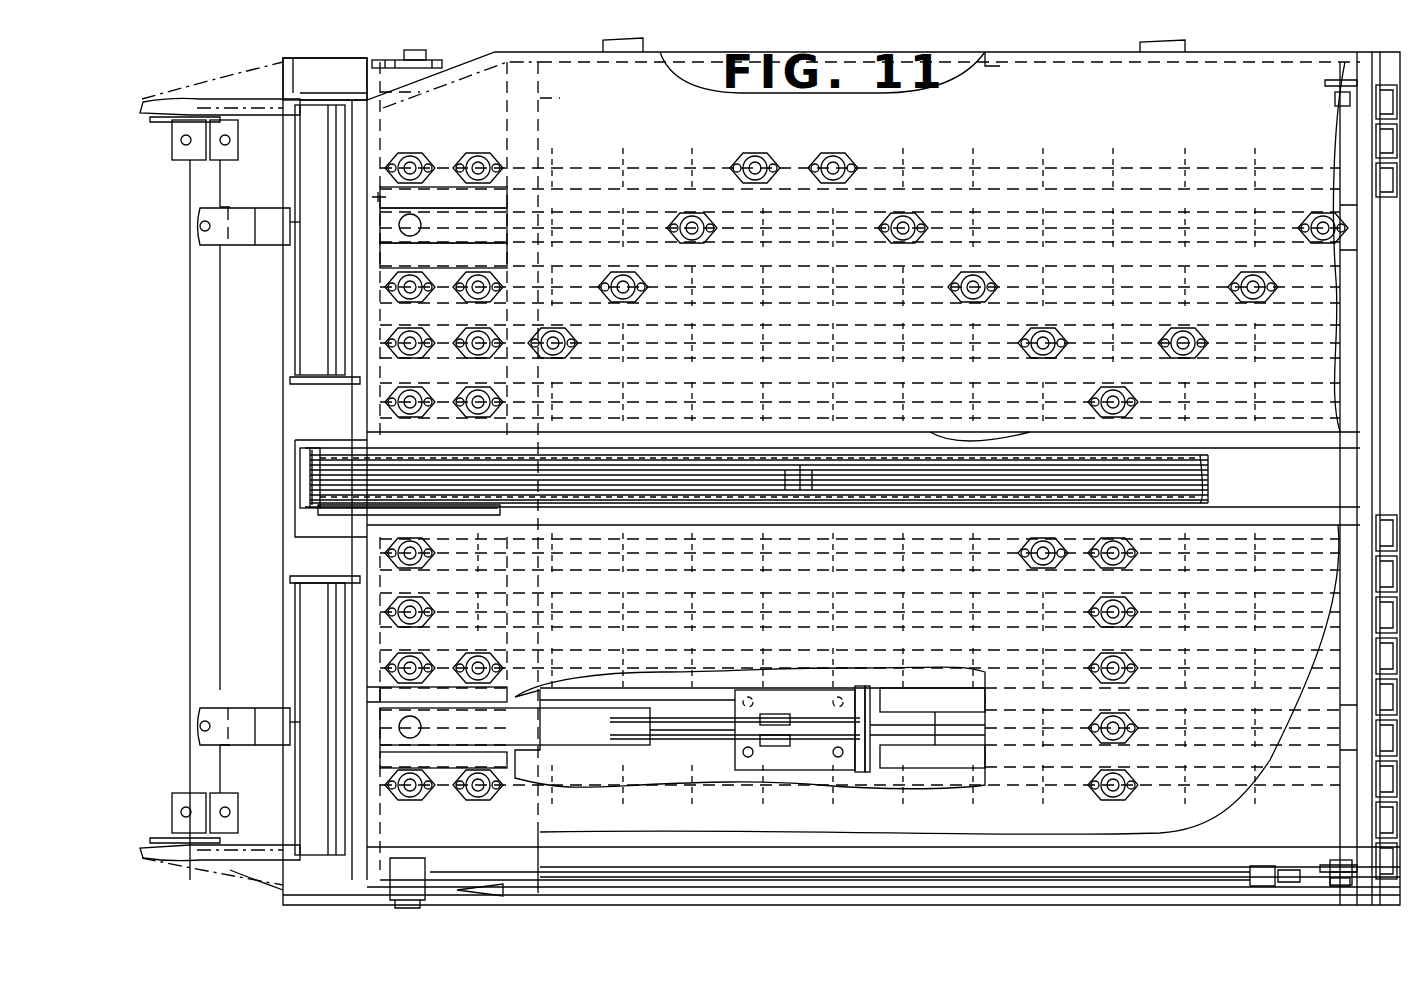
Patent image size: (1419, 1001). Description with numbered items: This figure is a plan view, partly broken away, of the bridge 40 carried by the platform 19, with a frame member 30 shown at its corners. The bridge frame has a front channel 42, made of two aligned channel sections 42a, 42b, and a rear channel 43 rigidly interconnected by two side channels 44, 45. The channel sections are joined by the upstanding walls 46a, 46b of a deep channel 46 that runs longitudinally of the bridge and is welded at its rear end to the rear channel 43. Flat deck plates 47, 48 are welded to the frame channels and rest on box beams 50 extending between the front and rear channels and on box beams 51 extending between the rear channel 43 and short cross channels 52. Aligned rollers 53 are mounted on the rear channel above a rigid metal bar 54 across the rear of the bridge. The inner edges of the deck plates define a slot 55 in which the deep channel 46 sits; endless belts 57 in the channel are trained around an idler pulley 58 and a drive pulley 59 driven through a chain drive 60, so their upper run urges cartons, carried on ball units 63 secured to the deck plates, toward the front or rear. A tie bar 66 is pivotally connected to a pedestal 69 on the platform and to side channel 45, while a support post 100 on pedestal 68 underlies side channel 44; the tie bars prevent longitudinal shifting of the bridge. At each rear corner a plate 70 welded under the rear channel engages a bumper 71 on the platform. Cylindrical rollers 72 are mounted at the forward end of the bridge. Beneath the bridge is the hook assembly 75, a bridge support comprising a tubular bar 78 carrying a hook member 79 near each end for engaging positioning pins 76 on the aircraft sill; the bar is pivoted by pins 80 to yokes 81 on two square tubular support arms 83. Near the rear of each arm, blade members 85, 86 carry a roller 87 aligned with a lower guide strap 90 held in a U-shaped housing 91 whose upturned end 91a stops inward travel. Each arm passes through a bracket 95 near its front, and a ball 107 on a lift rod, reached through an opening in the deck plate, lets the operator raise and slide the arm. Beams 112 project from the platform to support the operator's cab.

The platform 19 is at (267, 863).
The frame member 30 is at (280, 60).
The bridge 40 is at (277, 639).
The front channel 42 is at (439, 197).
The channel section 42a is at (370, 262).
The channel section 42b is at (370, 758).
The rear channel 43 is at (1365, 118).
The side channel 44 is at (985, 66).
The side channel 45 is at (1030, 892).
The deep channel 46 is at (700, 450).
The upstanding wall 46a is at (540, 450).
The upstanding wall 46b is at (565, 508).
The deck plate 47 is at (997, 123).
The deck plate 48 is at (874, 817).
The box beam 50 is at (1342, 352).
The box beam 51 is at (1195, 245).
The cross channel 52 is at (540, 745).
The roller 53 is at (1385, 175).
The metal bar 54 is at (1397, 470).
The slot 55 is at (862, 445).
The endless belt 57 is at (812, 490).
The idler pulley 58 is at (1212, 455).
The drive pulley 59 is at (297, 450).
The chain drive 60 is at (320, 512).
The ball unit 63 is at (480, 165).
The tie bar 66 is at (1115, 888).
The pedestal 68 is at (420, 64).
The pedestal 69 is at (392, 898).
The plate 70 is at (1325, 80).
The bumper 71 is at (1340, 98).
The cylindrical roller 72 is at (300, 306).
The hook assembly 75 is at (176, 509).
The positioning pin 76 is at (177, 150).
The tubular bar 78 is at (190, 443).
The hook member 79 is at (178, 128).
The pin 80 is at (200, 226).
The yoke 81 is at (238, 212).
The support arm 83 is at (290, 238).
The blade member 85 is at (672, 705).
The blade member 86 is at (708, 742).
The roller 87 is at (790, 720).
The lower guide strap 90 is at (822, 732).
The housing 91 is at (820, 688).
The upturned end 91a is at (870, 702).
The bracket 95 is at (385, 693).
The support post 100 is at (420, 92).
The ball 107 is at (406, 236).
The beam 112 is at (603, 46).